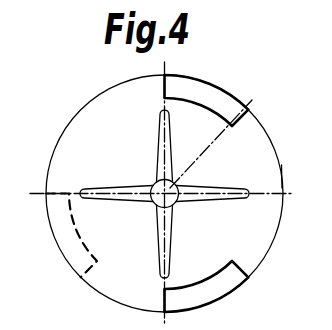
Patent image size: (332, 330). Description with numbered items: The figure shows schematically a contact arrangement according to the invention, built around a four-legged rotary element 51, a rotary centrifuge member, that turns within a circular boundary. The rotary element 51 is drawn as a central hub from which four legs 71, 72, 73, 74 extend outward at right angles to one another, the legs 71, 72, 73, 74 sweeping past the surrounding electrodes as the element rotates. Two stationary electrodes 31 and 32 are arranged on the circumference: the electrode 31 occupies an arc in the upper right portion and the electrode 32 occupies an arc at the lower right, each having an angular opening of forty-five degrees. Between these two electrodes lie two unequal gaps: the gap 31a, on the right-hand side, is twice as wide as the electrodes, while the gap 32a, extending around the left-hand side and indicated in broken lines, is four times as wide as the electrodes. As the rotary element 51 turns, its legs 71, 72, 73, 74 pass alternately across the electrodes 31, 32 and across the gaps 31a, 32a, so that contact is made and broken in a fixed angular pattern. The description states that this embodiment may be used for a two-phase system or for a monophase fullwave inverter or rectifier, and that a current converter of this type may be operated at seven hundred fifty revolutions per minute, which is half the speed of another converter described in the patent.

The stationary electrode 31 is at (219, 100).
The gap 31a is at (265, 176).
The stationary electrode 32 is at (209, 299).
The gap 32a is at (60, 155).
The four-legged rotary element 51 is at (148, 176).
The blade 71 is at (243, 189).
The blade 72 is at (170, 257).
The blade 73 is at (97, 201).
The blade 74 is at (157, 133).